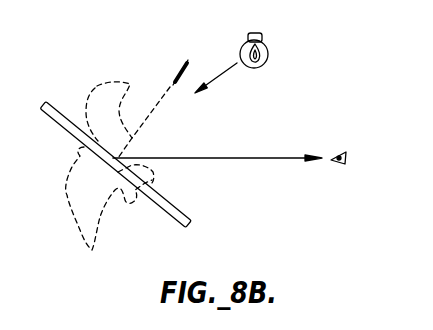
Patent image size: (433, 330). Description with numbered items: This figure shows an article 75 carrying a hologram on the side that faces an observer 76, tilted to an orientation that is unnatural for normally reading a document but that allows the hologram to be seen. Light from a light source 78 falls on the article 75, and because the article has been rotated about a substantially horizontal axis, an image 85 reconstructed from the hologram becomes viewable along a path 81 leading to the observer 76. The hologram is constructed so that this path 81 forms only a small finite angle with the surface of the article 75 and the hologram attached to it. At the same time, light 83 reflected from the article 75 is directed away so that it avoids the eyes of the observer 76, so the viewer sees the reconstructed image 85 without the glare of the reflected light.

The article 75 is at (195, 229).
The observer 76 is at (342, 153).
The light source 78 is at (241, 42).
The path 81 is at (290, 157).
The light reflected from the article 83 is at (168, 87).
The reconstructed image 85 is at (95, 88).